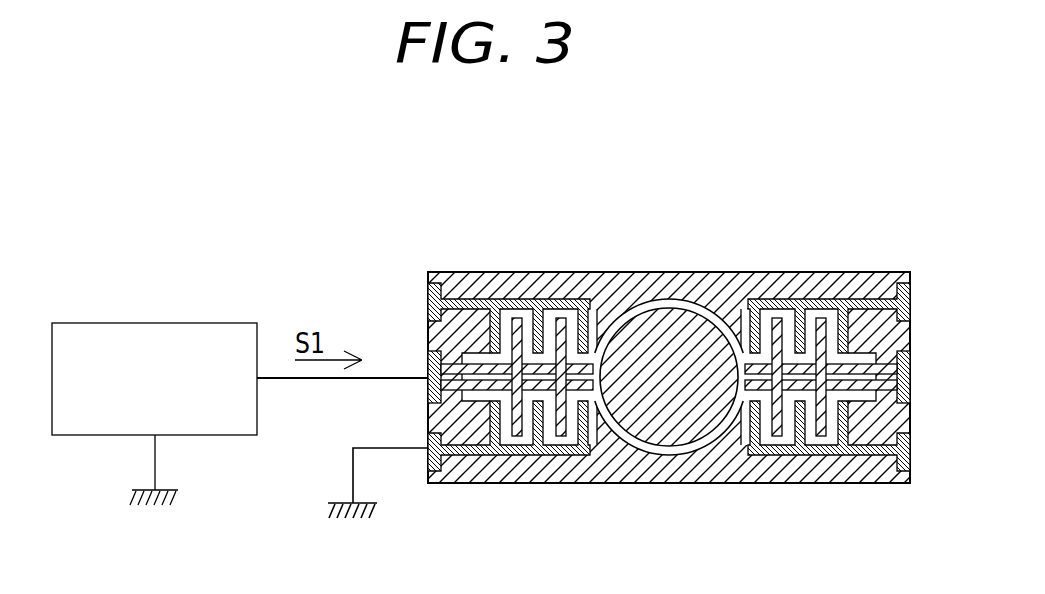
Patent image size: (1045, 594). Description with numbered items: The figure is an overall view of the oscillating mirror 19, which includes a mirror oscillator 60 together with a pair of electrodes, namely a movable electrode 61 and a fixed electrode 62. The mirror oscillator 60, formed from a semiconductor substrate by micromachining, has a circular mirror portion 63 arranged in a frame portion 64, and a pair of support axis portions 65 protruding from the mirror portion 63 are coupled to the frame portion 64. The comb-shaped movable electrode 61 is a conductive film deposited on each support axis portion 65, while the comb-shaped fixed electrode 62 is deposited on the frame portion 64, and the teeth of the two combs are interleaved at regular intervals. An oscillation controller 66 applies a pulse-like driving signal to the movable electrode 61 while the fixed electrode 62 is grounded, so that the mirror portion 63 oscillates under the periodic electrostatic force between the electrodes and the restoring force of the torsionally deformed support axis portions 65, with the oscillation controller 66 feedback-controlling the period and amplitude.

The oscillating mirror 19 is at (694, 230).
The mirror oscillator 60 is at (666, 452).
The movable electrode 61 is at (515, 420).
The fixed electrode 62 is at (458, 296).
The mirror portion 63 is at (632, 333).
The frame portion 64 is at (763, 470).
The support axis portion 65 is at (548, 368).
The oscillation controller 66 is at (163, 324).